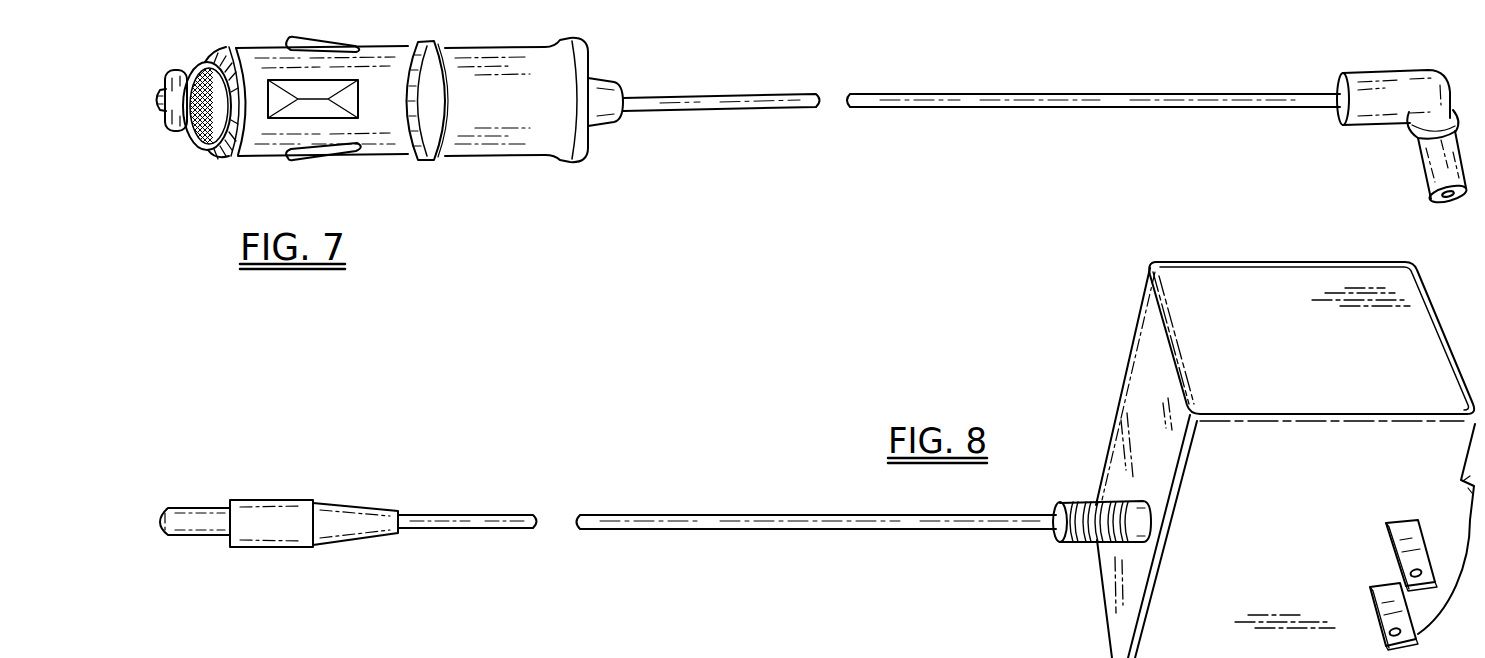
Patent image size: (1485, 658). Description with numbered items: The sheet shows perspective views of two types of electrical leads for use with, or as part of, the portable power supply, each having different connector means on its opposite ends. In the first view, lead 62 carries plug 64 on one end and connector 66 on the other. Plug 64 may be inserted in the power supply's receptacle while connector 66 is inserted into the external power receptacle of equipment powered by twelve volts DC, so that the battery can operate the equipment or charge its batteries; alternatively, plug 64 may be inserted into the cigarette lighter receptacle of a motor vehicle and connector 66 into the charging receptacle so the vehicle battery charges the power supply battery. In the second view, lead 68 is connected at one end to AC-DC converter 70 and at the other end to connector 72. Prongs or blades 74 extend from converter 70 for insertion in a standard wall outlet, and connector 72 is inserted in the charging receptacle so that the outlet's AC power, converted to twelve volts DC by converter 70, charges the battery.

In FIG. 7, the lead 62 is at (959, 107).
In FIG. 7, the plug 64 is at (360, 152).
In FIG. 7, the connector 66 is at (1424, 162).
In FIG. 8, the lead 68 is at (684, 515).
In FIG. 8, the AC-DC converter 70 is at (1133, 330).
In FIG. 8, the connector 72 is at (266, 499).
In FIG. 8, the prongs or blades 74 is at (1385, 585).